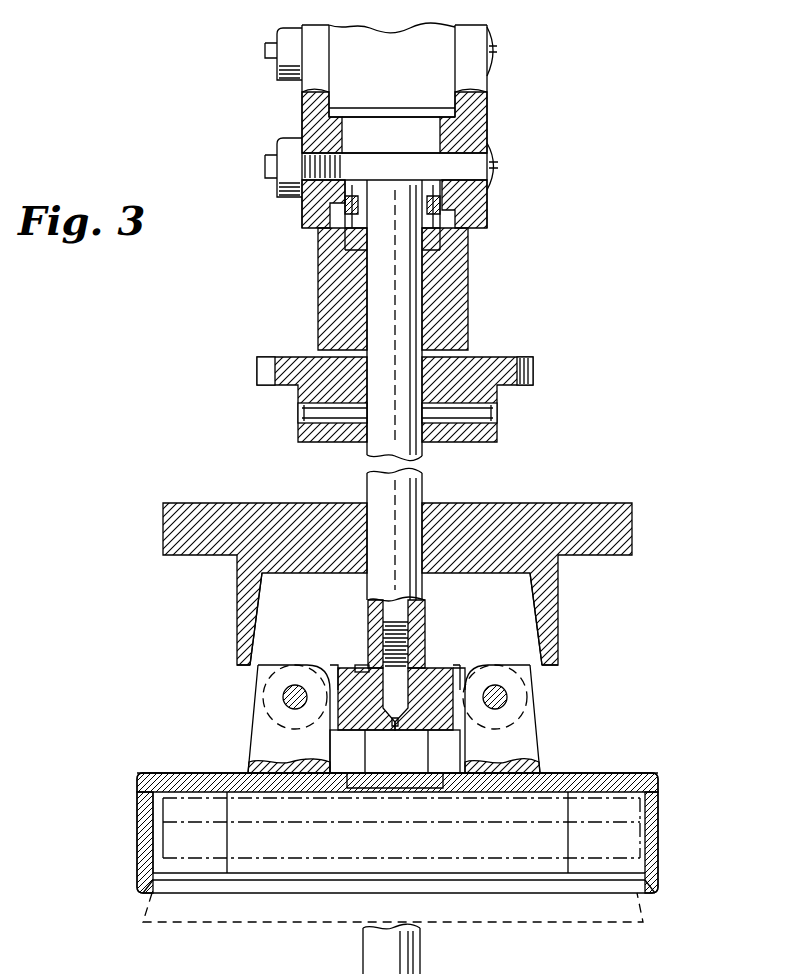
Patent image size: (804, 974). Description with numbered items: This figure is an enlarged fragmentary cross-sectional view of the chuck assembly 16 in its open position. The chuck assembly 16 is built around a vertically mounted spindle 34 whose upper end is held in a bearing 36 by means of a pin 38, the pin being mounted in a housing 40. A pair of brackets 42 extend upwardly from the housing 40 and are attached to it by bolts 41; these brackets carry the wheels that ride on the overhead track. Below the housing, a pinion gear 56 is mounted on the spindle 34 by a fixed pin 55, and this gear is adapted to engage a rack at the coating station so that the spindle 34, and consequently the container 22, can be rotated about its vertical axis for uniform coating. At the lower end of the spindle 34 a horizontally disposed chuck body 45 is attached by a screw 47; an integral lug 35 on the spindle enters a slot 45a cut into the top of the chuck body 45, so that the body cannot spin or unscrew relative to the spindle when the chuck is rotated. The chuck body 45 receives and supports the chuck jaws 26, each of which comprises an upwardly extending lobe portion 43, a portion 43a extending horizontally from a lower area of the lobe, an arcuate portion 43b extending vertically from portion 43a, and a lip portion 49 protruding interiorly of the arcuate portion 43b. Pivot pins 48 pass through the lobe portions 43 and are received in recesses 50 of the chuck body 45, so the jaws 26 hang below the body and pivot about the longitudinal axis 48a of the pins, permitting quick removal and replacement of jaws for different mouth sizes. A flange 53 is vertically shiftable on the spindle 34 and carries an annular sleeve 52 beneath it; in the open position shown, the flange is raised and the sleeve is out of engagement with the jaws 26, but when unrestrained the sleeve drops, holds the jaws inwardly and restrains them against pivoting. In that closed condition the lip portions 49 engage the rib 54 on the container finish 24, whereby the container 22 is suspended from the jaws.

The chuck assembly 16 is at (66, 666).
The container 22 is at (143, 922).
The container finish 24 is at (163, 837).
The chuck jaws 26 is at (661, 773).
The spindle 34 is at (422, 458).
The integral lug 35 is at (369, 664).
The bearing 36 is at (432, 250).
The pin 38 is at (473, 248).
The housing 40 is at (460, 300).
The bolts 41 is at (472, 166).
The brackets 42 is at (306, 87).
The lobe portion 43 is at (264, 738).
The horizontal portion 43a is at (177, 773).
The arcuate portion 43b is at (137, 820).
The chuck body 45 is at (441, 685).
The slot 45a is at (456, 678).
The screw 47 is at (418, 643).
The pivot pins 48 is at (283, 699).
The longitudinal axis 48a is at (300, 680).
The lip portion 49 is at (138, 881).
The recesses 50 is at (332, 658).
The annular sleeve 52 is at (562, 582).
The flange 53 is at (604, 513).
The rib 54 is at (250, 852).
The fixed pin 55 is at (497, 412).
The pinion gear 56 is at (533, 376).